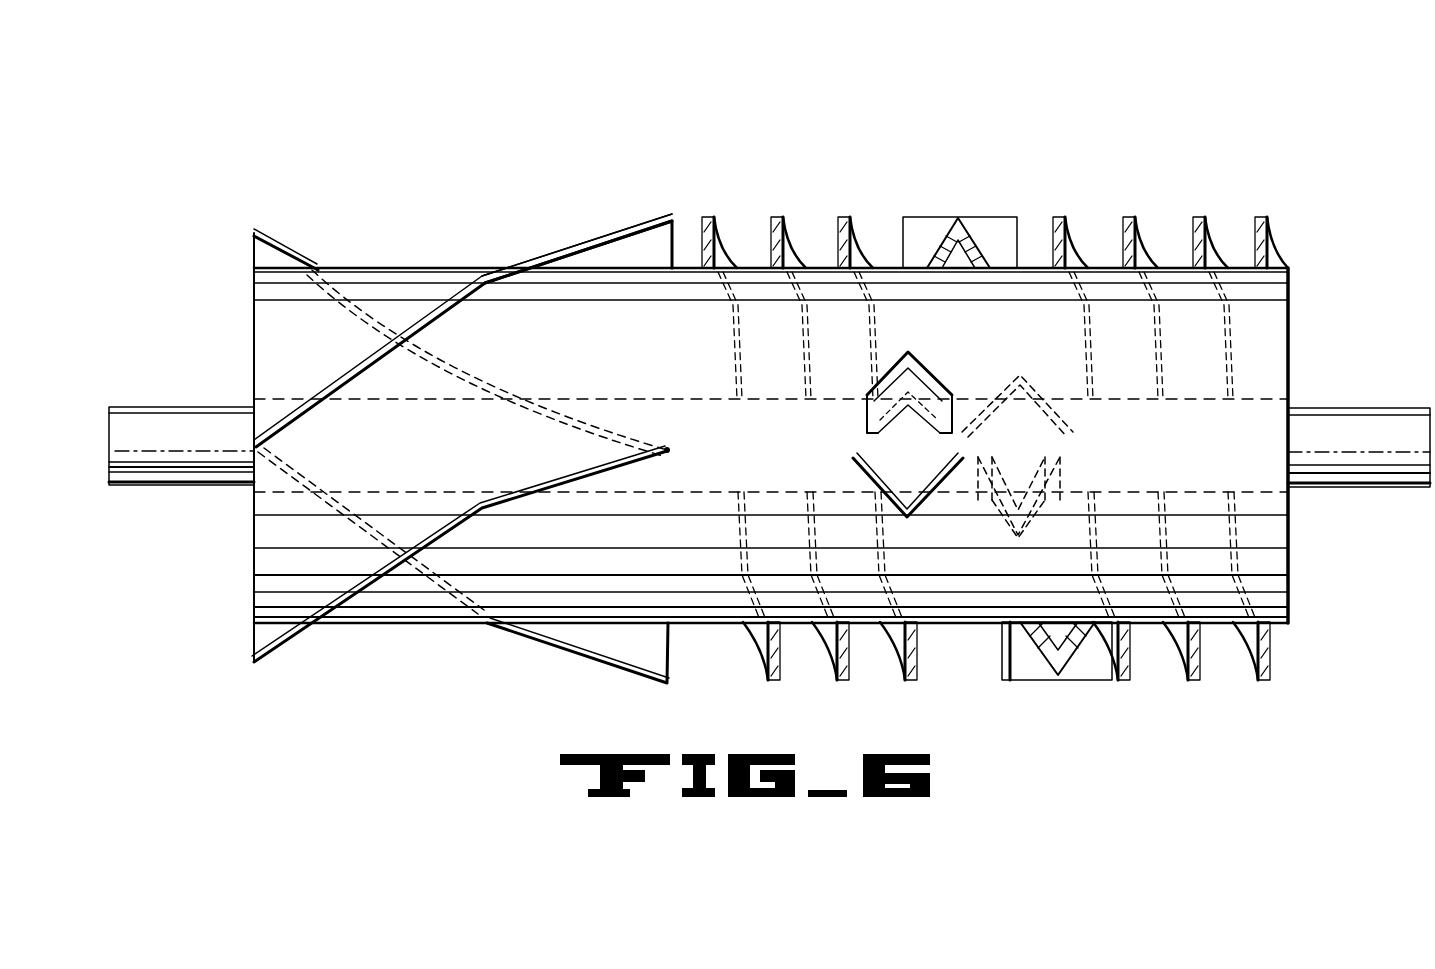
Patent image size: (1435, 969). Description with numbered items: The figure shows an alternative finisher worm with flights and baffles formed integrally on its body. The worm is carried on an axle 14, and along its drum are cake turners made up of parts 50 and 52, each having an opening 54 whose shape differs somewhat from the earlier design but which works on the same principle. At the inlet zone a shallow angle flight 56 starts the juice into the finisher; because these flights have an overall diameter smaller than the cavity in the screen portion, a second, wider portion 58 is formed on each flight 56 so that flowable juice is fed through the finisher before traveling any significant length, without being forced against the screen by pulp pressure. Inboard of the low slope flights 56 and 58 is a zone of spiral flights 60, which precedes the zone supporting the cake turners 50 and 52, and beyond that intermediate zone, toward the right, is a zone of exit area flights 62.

The axle 14 is at (1344, 407).
The cake turner part 50 is at (1018, 228).
The cake turner part 52 is at (930, 382).
The opening 54 is at (960, 238).
The shallow angle flight 56 is at (432, 310).
The wider portion 58 is at (570, 248).
The spiral flights 60 is at (780, 195).
The exit area flights 62 is at (1168, 207).